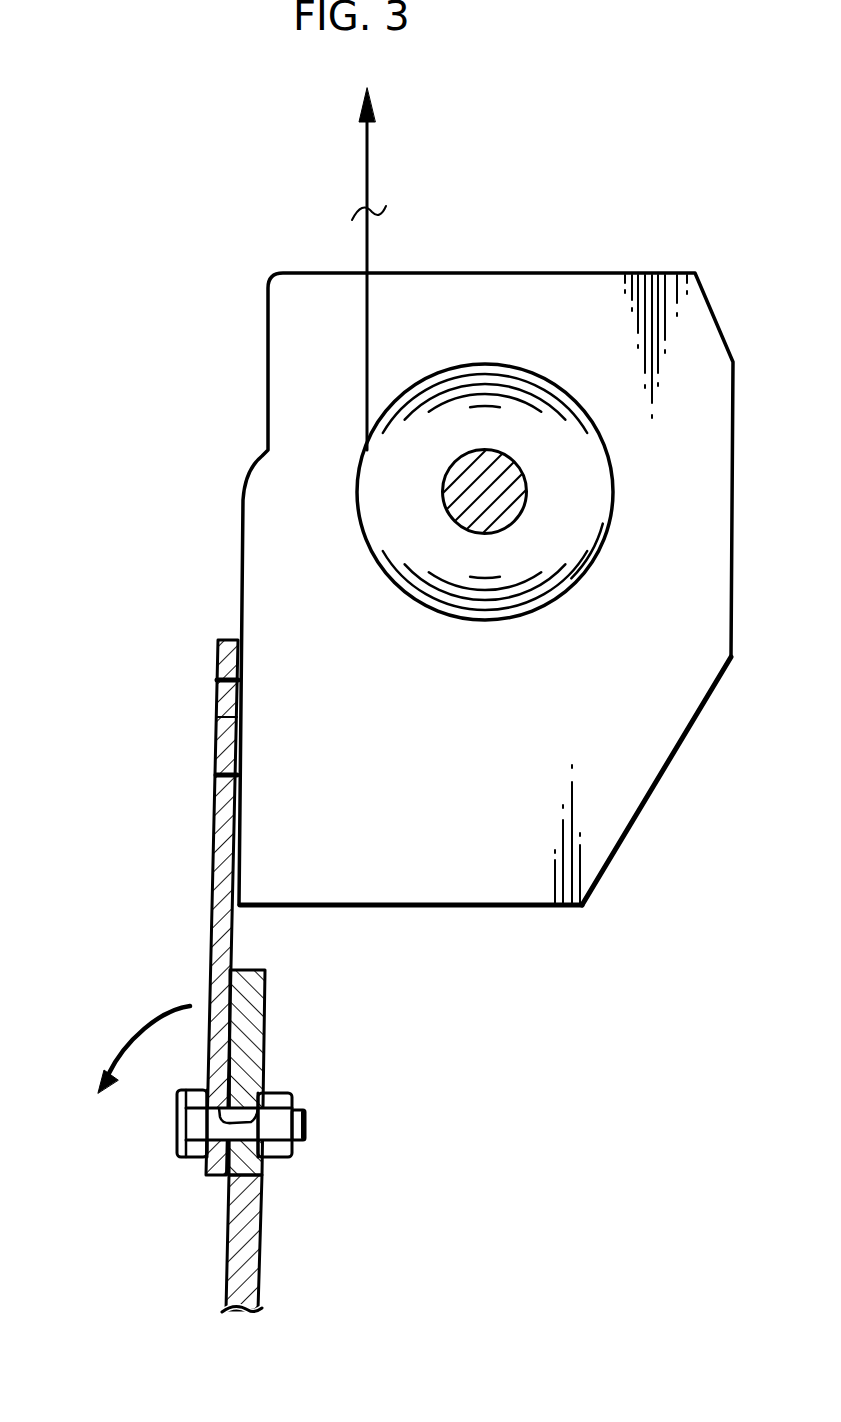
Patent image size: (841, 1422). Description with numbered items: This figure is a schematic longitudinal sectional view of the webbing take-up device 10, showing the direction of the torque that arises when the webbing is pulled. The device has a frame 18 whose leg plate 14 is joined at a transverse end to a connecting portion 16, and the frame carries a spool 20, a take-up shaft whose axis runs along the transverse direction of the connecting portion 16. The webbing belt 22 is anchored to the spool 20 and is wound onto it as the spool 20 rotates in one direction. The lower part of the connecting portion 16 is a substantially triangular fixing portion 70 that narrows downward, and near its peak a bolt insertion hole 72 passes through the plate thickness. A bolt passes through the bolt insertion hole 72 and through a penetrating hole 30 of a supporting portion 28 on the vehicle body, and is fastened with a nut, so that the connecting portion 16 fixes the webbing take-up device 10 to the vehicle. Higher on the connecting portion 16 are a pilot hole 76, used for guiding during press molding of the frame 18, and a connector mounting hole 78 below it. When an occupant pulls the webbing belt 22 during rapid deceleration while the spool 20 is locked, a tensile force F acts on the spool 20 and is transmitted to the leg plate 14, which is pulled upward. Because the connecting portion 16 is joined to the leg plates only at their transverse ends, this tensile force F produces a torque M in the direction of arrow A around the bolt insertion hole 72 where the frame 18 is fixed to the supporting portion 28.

The webbing take-up device 10 is at (611, 243).
The leg plate 14 is at (450, 878).
The connecting portion 16 is at (237, 930).
The frame 18 is at (523, 912).
The spool 20 is at (490, 525).
The webbing belt 22 is at (369, 358).
The supporting portion 28 is at (265, 1028).
The penetrating hole 30 is at (305, 1138).
The fixing portion 70 is at (207, 1162).
The bolt insertion hole 72 is at (246, 1140).
The pilot hole 76 is at (217, 697).
The connector mounting hole 78 is at (224, 797).
The tensile force F is at (368, 175).
The torque M is at (137, 1028).
The direction of arrow A is at (96, 1110).